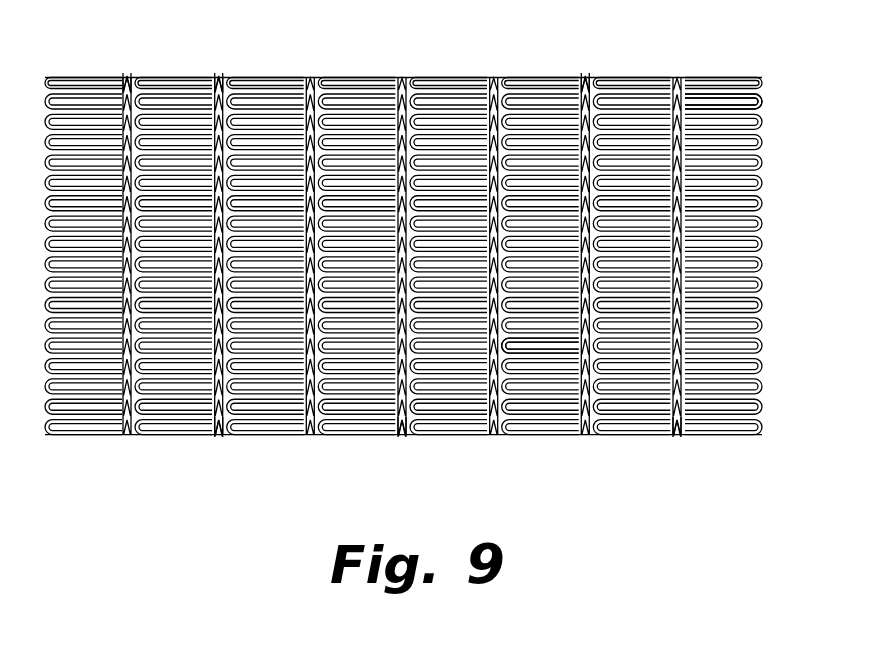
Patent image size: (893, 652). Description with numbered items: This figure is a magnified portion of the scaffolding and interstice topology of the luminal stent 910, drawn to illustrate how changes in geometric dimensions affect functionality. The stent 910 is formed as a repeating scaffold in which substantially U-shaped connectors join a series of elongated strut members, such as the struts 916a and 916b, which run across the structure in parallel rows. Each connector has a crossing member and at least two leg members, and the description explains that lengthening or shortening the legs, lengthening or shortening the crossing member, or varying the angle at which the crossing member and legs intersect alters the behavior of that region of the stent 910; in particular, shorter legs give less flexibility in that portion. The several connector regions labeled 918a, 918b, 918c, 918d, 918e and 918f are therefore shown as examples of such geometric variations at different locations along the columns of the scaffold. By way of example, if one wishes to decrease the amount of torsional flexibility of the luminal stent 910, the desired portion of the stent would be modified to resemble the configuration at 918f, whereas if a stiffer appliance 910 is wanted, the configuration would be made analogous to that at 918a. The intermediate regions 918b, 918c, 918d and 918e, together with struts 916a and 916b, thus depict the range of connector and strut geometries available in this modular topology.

The luminal stent 910 is at (441, 260).
The fin 916a is at (732, 107).
The fin 916b is at (542, 353).
The connector configuration 918a is at (131, 80).
The fin connecting portion 918b is at (220, 423).
The fin connecting portion 918c is at (222, 82).
The fin connecting portion 918d is at (403, 429).
The fin connecting portion 918e is at (584, 84).
The connector configuration 918f is at (680, 433).